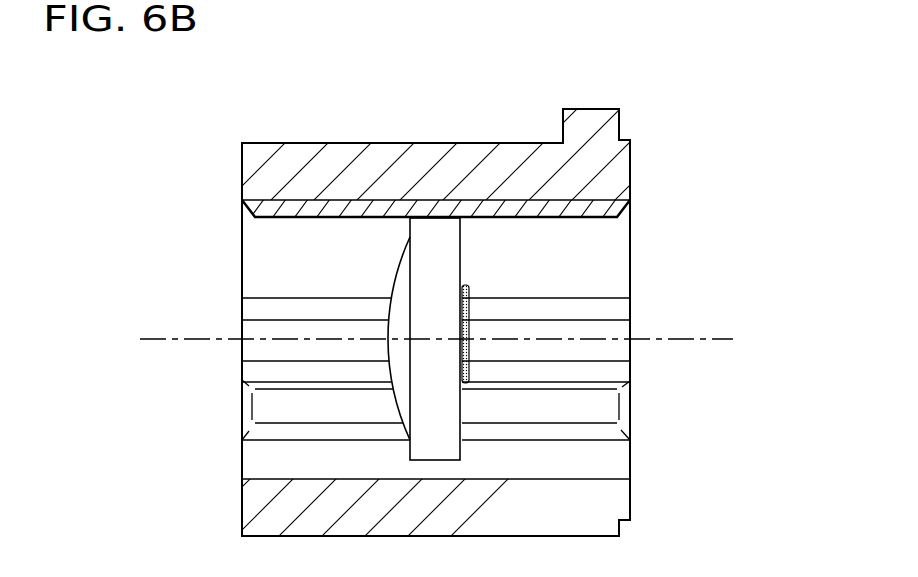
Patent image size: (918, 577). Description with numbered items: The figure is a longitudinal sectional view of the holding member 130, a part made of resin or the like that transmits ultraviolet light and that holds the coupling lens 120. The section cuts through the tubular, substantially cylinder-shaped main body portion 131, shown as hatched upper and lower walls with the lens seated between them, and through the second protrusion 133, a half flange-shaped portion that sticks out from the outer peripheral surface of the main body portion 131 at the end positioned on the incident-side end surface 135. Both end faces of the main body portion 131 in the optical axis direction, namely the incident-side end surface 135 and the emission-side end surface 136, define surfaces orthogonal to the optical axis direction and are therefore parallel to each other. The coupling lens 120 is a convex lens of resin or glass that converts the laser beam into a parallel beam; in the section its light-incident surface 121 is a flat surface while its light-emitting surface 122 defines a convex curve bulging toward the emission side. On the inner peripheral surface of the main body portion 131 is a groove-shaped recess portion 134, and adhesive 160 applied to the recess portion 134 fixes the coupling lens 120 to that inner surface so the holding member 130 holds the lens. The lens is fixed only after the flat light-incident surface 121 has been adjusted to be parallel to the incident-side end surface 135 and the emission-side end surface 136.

The holding member 130 is at (694, 111).
The main body portion 131 is at (388, 157).
The second protrusion 133 is at (590, 120).
The recess portion 134 is at (615, 330).
The incident-side end surface 135 is at (631, 167).
The emission-side end surface 136 is at (242, 168).
The coupling lens 120 is at (291, 333).
The light-incident surface 121 is at (462, 278).
The light-emitting surface 122 is at (397, 403).
The adhesive 160 is at (469, 348).